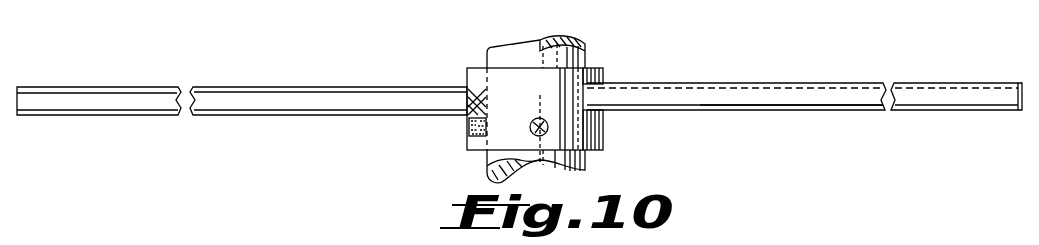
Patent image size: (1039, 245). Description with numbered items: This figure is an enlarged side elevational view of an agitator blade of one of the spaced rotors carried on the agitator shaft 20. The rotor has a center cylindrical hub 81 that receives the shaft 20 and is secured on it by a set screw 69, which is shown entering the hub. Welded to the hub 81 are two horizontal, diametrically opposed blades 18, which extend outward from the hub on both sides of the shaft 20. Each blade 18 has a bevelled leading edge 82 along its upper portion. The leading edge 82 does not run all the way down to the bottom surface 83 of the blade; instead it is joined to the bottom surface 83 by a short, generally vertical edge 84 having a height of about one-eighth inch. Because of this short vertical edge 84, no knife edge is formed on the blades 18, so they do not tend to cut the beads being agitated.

The blade 18 is at (801, 83).
The agitator shaft 20 is at (566, 50).
The set screw 69 is at (537, 118).
The center cylindrical hub 81 is at (590, 72).
The bevelled leading edge 82 is at (240, 100).
The bottom surface 83 is at (848, 108).
The short generally vertical edge 84 is at (115, 114).